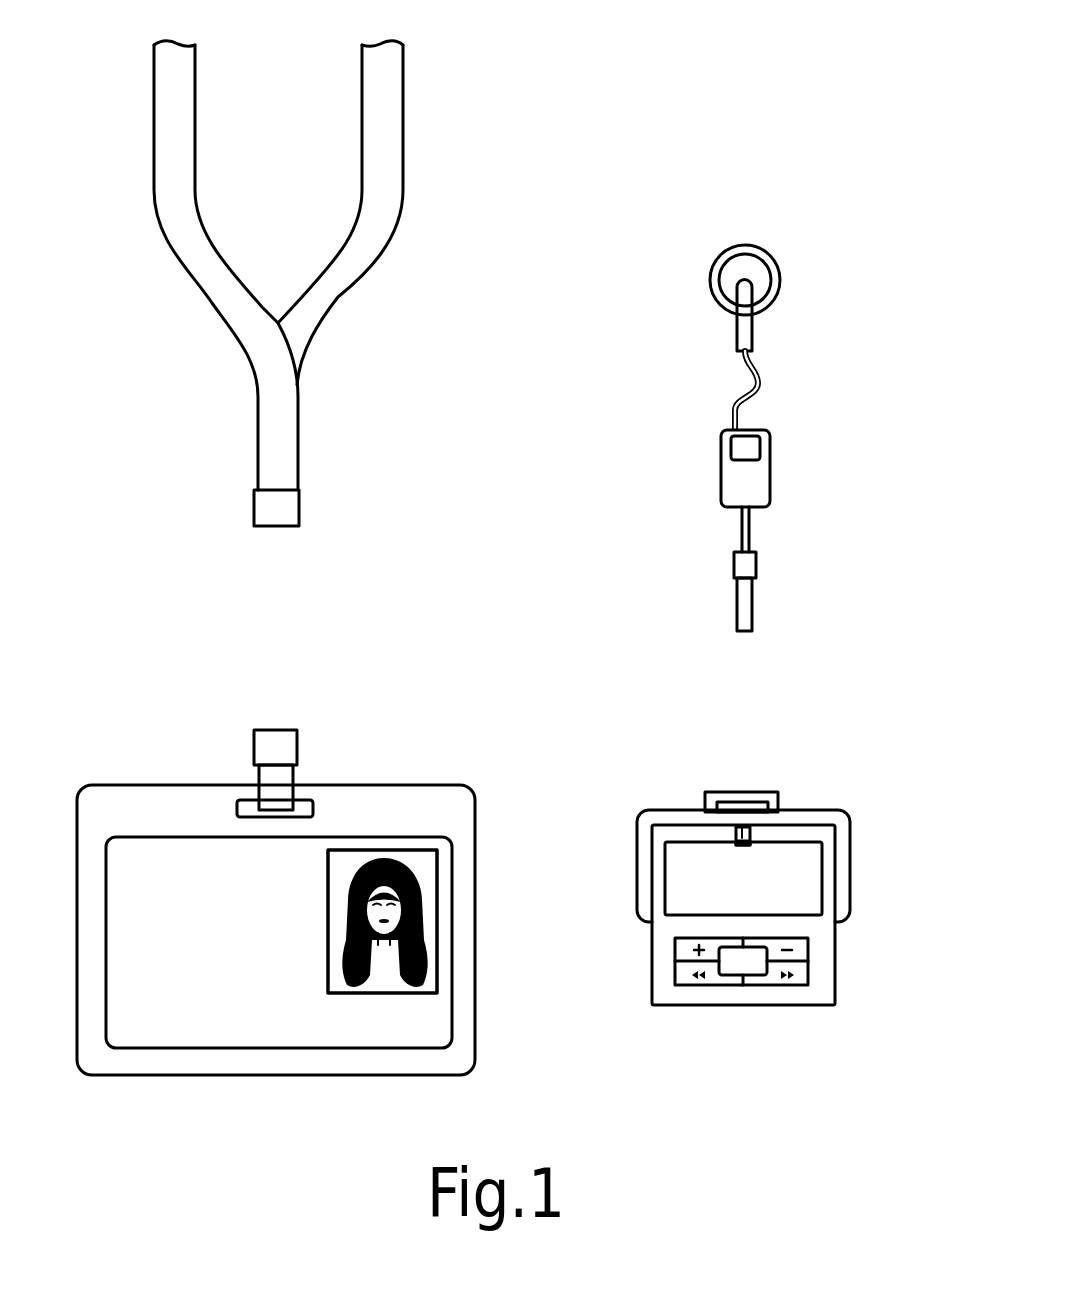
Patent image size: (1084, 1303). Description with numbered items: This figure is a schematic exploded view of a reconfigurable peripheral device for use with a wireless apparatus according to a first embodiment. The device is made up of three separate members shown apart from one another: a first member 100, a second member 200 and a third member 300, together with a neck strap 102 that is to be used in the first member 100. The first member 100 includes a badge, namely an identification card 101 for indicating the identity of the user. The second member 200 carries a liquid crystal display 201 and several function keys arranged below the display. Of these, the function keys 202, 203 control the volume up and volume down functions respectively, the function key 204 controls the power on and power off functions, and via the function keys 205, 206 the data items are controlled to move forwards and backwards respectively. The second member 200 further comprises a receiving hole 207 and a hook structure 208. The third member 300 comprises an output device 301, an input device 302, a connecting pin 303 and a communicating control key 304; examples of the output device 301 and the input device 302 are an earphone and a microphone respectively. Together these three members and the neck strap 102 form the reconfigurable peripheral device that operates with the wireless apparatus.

The first member 100 is at (157, 798).
The identification card 101 is at (208, 1033).
The neck strap 102 is at (357, 262).
The second member 200 is at (702, 833).
The liquid crystal display (LCD) 201 is at (678, 878).
The function key 202 is at (687, 950).
The function key 203 is at (800, 950).
The function key 204 is at (737, 962).
The function key 205 is at (677, 975).
The function key 206 is at (807, 975).
The receiving hole 207 is at (743, 833).
The hook structure 208 is at (842, 838).
The third member 300 is at (756, 383).
The output device 301 is at (754, 245).
The input device 302 is at (731, 483).
The connecting pin 303 is at (742, 609).
The communicating control key 304 is at (750, 450).